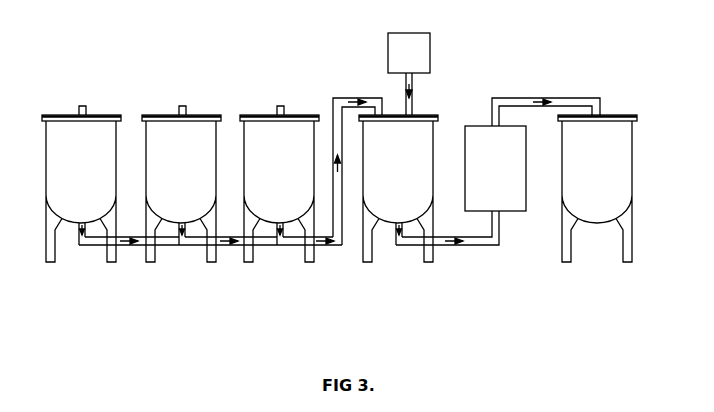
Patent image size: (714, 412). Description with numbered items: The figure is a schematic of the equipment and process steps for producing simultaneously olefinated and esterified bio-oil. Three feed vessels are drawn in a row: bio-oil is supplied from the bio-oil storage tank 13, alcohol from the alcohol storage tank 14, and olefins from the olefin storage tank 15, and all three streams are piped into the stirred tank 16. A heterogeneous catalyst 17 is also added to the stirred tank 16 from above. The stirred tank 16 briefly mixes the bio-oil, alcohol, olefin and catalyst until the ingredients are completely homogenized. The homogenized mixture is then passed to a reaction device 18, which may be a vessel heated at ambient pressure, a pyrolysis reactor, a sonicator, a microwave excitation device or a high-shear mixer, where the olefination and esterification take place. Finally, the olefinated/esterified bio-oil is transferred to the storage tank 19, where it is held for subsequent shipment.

The bio-oil storage tank 13 is at (90, 161).
The alcohol storage tank 14 is at (190, 161).
The olefin storage tank 15 is at (288, 160).
The stirred tank 16 is at (417, 160).
The heterogeneous catalyst 17 is at (397, 58).
The pyrolysis reactor, sonicator, microwave excitation device or high-shear mixer 18 is at (509, 134).
The storage tank 19 is at (604, 160).